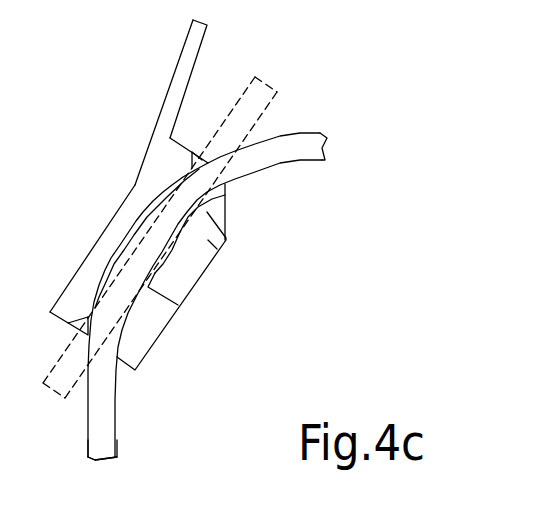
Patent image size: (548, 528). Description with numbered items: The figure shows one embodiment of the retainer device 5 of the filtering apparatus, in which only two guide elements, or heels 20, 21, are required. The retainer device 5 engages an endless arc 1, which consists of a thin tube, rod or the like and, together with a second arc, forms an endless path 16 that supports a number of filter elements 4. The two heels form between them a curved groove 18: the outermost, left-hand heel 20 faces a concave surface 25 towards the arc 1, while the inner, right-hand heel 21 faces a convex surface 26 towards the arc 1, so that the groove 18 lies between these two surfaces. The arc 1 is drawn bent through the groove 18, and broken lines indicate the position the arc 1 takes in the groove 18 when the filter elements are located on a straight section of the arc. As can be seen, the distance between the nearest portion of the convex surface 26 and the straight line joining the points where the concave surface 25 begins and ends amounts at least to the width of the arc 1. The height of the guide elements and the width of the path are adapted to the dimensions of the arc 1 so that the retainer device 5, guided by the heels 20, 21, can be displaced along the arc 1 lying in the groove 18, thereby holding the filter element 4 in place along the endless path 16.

The endless arc 1 is at (267, 82).
The filter element 4 is at (180, 77).
The retainer device 5 is at (150, 330).
The endless path 16 is at (105, 447).
The curved groove 18 is at (225, 197).
The guide element (heel) 20 is at (135, 207).
The guide element (heel) 21 is at (212, 244).
The concave surface 25 is at (108, 267).
The convex surface 26 is at (155, 273).